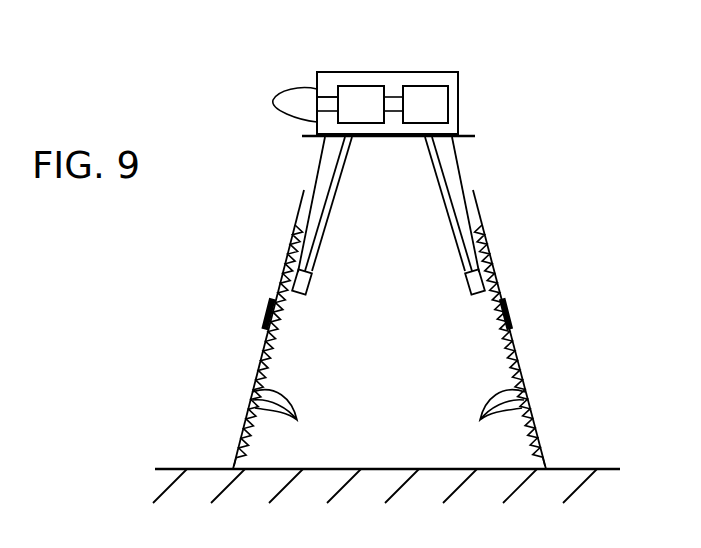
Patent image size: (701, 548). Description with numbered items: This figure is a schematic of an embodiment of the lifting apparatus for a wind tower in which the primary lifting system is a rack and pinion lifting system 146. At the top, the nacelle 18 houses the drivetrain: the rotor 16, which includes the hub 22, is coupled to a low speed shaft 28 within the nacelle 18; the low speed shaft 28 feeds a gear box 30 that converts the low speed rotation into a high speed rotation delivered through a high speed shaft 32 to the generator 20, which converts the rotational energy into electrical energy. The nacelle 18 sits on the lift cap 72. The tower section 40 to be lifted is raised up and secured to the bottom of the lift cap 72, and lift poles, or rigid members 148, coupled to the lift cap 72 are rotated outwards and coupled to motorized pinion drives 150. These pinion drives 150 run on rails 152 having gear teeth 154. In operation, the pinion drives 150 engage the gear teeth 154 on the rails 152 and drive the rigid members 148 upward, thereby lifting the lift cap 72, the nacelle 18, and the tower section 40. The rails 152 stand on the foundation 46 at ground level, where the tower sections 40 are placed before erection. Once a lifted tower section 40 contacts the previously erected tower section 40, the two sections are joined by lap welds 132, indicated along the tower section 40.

The rotor 16 is at (274, 82).
The nacelle 18 is at (444, 62).
The generator 20 is at (452, 106).
The hub 22 is at (291, 113).
The low speed shaft 28 is at (329, 96).
The gear box 30 is at (358, 85).
The high speed shaft 32 is at (397, 96).
The tower section 40 is at (462, 178).
The foundation 46 is at (577, 468).
The lift cap 72 is at (470, 139).
The lap weld 132 is at (266, 322).
The rack and pinion lifting system 146 is at (319, 316).
The lift poles 148 is at (342, 177).
The motorized pinion drives 150 is at (468, 288).
The rails 152 is at (289, 363).
The gear teeth 154 is at (297, 420).